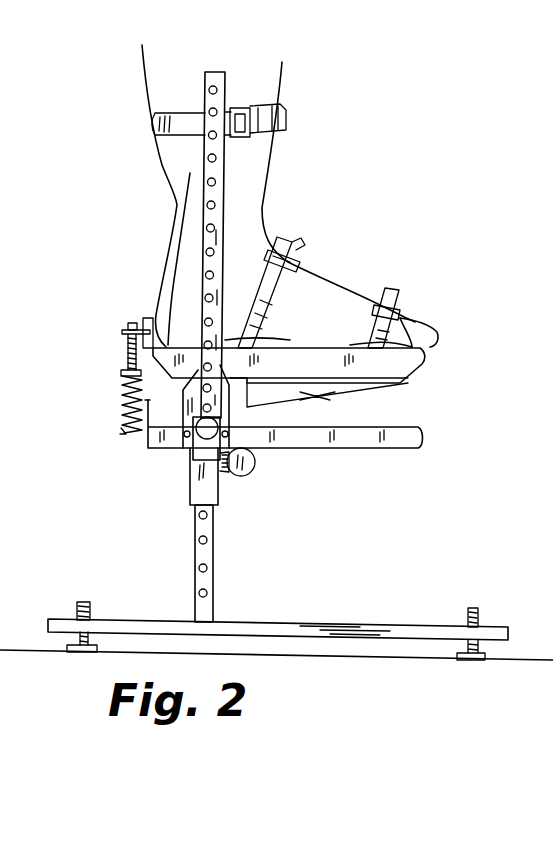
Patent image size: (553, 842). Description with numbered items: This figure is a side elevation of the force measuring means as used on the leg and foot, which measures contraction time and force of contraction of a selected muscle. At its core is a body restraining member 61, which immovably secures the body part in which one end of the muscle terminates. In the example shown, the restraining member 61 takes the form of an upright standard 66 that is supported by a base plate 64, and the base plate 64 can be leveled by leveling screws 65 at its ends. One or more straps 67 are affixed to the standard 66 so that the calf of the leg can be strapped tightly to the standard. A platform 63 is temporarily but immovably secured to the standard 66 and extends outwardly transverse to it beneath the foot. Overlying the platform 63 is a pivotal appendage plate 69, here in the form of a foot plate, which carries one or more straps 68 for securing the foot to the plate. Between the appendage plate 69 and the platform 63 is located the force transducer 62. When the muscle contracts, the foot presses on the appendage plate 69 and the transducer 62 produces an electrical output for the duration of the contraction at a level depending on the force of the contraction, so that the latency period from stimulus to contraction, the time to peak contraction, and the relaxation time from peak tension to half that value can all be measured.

The body restraining member 61 is at (196, 92).
The force transducer 62 is at (313, 392).
The platform 63 is at (421, 437).
The base plate 64 is at (357, 625).
The leveling screws 65 is at (478, 609).
The standard 66 is at (212, 557).
The straps 67 is at (252, 130).
The straps 68 is at (303, 240).
The pivotal appendage plate 69 is at (424, 356).